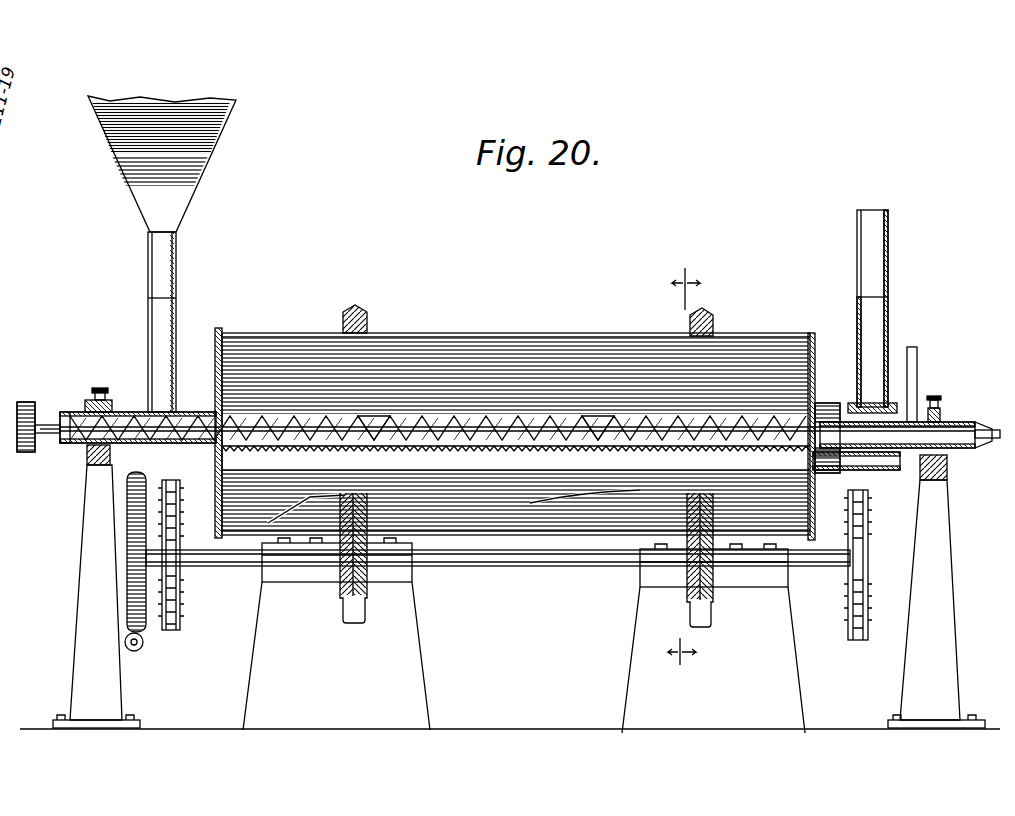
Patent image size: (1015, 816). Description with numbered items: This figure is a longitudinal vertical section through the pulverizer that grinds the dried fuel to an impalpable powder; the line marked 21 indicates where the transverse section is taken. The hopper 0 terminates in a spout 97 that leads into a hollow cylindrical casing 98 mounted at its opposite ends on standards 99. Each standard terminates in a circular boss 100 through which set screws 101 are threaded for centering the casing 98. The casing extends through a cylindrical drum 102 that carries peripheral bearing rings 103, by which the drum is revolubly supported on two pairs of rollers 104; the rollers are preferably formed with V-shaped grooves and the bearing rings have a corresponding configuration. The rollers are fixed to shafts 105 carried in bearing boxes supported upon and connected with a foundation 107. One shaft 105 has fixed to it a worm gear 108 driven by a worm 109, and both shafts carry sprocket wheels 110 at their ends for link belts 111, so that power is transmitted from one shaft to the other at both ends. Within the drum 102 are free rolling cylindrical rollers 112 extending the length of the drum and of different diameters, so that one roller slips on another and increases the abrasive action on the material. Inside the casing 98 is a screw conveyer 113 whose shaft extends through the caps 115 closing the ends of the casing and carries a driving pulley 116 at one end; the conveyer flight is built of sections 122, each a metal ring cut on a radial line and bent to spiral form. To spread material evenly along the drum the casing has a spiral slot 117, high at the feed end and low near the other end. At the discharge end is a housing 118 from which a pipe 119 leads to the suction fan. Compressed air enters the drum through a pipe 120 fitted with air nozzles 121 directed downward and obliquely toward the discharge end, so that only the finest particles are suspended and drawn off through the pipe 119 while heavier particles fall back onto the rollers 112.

The hopper 0 is at (180, 180).
The spout 97 is at (170, 330).
The hollow cylindrical casing 98 is at (143, 443).
The standards 99 is at (90, 592).
The circular bosses 100 is at (120, 398).
The set screws 101 is at (112, 386).
The cylindrical drum 102 is at (445, 322).
The peripheral bearing rings 103 is at (370, 295).
The rollers 104 is at (345, 590).
The shafts 105 is at (232, 553).
The foundation 107 is at (412, 662).
The worm gear 108 is at (128, 517).
The worm 109 is at (140, 650).
The sprocket wheels 110 is at (180, 620).
The link belts 111 is at (180, 598).
The cylindrical rollers 112 is at (553, 500).
The screw conveyer 113 is at (585, 418).
The caps 115 is at (60, 425).
The driving pulley 116 is at (26, 402).
The spiral slot 117 is at (430, 416).
The housing 118 is at (895, 470).
The pipe 119 is at (887, 263).
The pipe 120 is at (917, 386).
The air nozzles 121 is at (620, 451).
The section 122 is at (374, 416).
The section line 21 is at (684, 473).